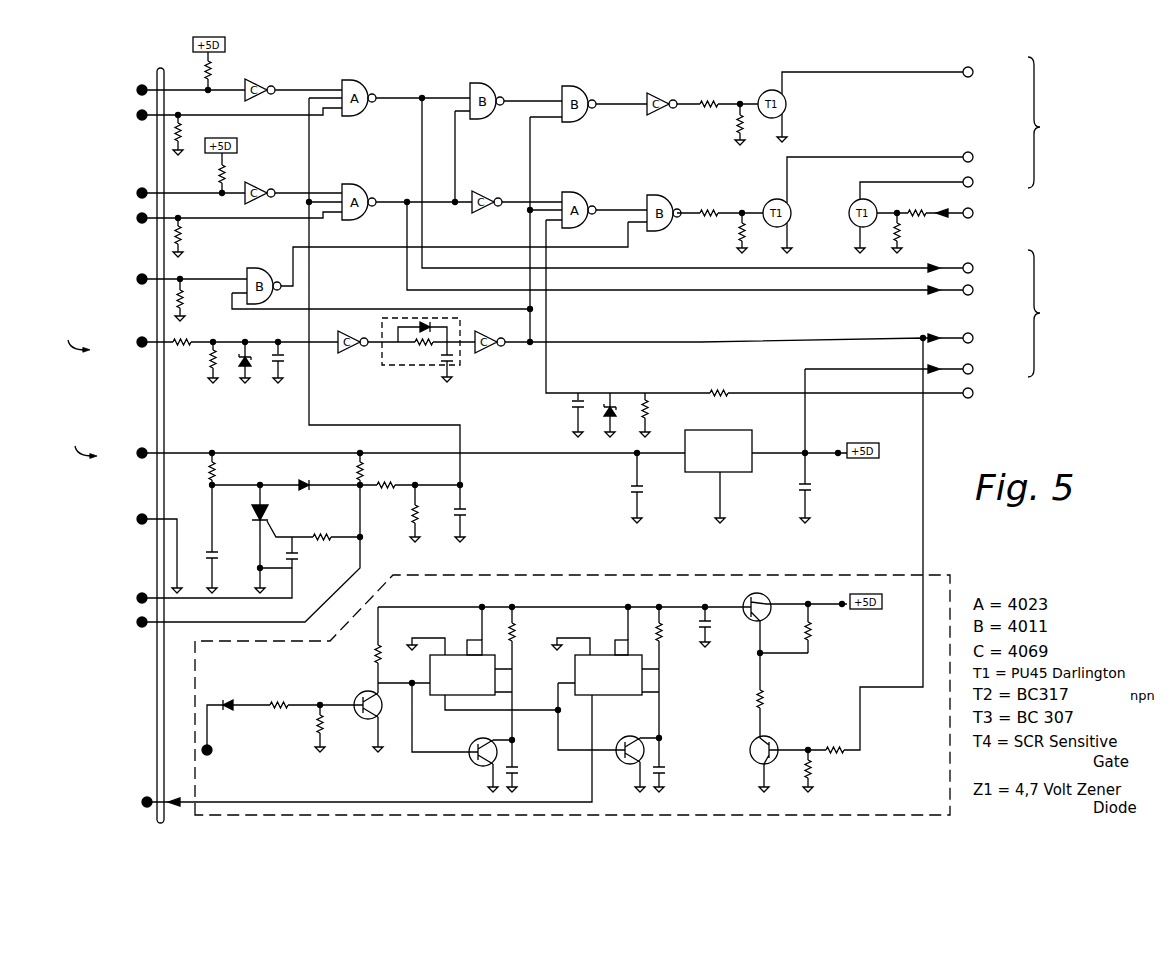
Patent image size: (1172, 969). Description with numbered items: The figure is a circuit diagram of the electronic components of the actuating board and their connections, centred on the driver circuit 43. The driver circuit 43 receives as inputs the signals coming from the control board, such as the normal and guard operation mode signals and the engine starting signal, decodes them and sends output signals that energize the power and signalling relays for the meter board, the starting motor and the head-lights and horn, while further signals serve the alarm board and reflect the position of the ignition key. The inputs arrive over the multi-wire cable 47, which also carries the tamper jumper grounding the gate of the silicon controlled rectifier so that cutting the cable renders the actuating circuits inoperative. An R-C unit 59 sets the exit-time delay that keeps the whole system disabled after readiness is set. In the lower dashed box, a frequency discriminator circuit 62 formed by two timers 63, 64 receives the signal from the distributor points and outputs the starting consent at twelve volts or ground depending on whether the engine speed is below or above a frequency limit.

The driver circuit 43 is at (932, 533).
The multi-wire cable 47 is at (157, 70).
The R-C unit 59 is at (432, 366).
The frequency discriminator circuit 62 is at (474, 575).
The timer 63 is at (437, 685).
The timer 64 is at (592, 657).